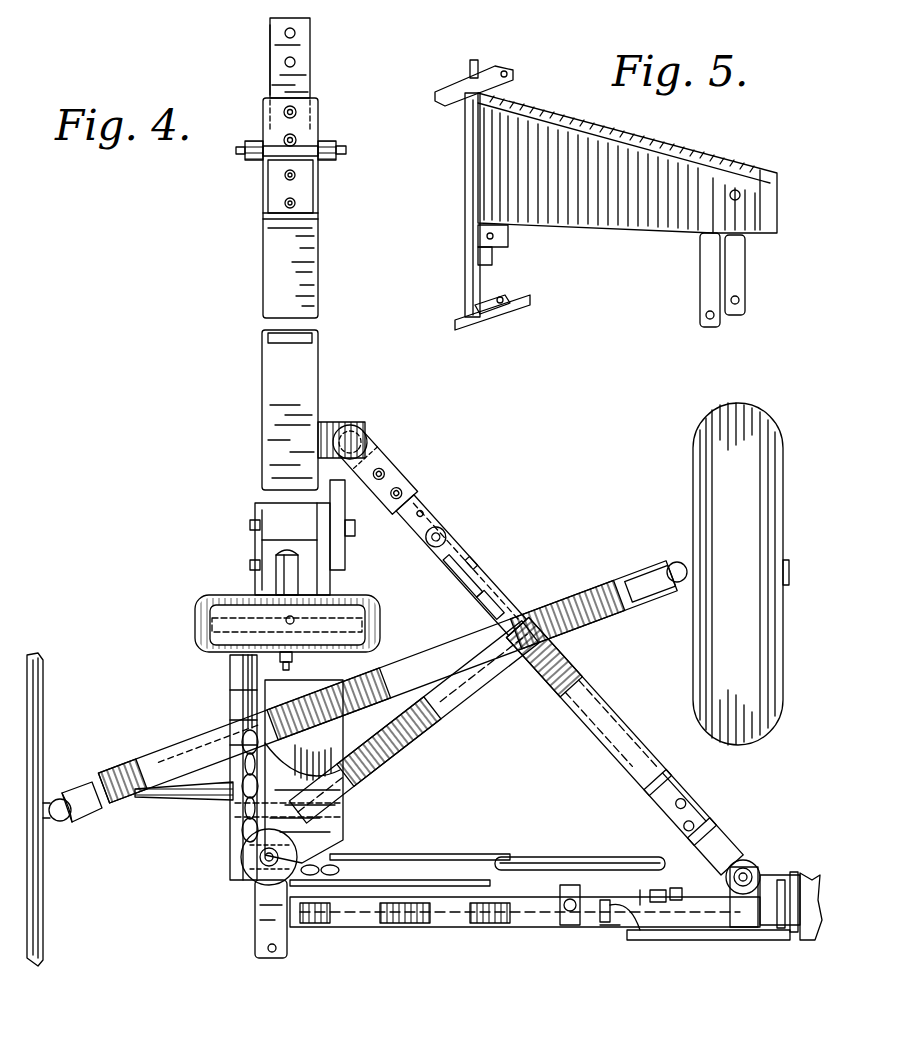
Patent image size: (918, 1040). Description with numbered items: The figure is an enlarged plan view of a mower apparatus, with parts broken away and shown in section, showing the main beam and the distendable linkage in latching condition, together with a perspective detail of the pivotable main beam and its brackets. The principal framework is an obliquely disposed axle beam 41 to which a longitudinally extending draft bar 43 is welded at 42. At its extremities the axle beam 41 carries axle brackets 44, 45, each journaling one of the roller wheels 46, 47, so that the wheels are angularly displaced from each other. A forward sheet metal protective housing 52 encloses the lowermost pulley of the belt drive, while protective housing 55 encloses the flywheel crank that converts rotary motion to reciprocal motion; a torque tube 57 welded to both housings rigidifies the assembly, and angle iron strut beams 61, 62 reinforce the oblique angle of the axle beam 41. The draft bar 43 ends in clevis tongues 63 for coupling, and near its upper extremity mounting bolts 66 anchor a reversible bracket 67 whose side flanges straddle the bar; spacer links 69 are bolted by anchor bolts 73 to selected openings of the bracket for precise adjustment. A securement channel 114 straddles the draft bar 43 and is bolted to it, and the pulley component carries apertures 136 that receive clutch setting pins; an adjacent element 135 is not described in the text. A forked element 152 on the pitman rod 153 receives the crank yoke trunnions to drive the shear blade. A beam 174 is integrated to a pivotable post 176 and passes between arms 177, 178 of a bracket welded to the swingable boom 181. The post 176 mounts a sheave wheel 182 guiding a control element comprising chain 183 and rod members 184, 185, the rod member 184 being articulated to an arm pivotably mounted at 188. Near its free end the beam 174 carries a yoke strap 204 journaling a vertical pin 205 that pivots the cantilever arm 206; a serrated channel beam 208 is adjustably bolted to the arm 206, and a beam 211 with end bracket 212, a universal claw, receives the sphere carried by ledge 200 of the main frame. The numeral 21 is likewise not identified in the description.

In FIG. 4, the centerline / device axis 21 is at (291, 391).
In FIG. 4, the axle beam 41 is at (150, 762).
In FIG. 4, the weld 42 is at (240, 705).
In FIG. 4, the draft bar 43 is at (272, 70).
In FIG. 4, the axle bracket 44 is at (60, 822).
In FIG. 4, the axle bracket 45 is at (675, 565).
In FIG. 4, the roller wheel 46 is at (45, 942).
In FIG. 4, the roller wheel 47 is at (765, 712).
In FIG. 4, the forward sheet metal protective housing 52 is at (380, 630).
In FIG. 4, the protective housing 55 is at (355, 823).
In FIG. 4, the torque tube 57 is at (395, 768).
In FIG. 4, the angle iron strut beam 61 is at (430, 720).
In FIG. 4, the angle iron strut beam 62 is at (180, 803).
In FIG. 4, the clevis tongues 63 is at (312, 68).
In FIG. 4, the mounting bolts 66 is at (284, 205).
In FIG. 4, the reversible bracket 67 is at (320, 202).
In FIG. 4, the spacer links 69 is at (325, 147).
In FIG. 4, the anchor bolts 73 is at (346, 150).
In FIG. 4, the securement channel 114 is at (282, 536).
In FIG. 4, the wheel bolt 135 is at (268, 664).
In FIG. 4, the apertures 136 is at (262, 640).
In FIG. 4, the forked element 152 is at (330, 862).
In FIG. 4, the pitman rod 153 is at (500, 857).
In FIG. 4, the beam 174 is at (672, 915).
In FIG. 5, the pivotable post 176 is at (470, 258).
In FIG. 5, the arm of support bracket 177 is at (705, 296).
In FIG. 5, the arm of support bracket 178 is at (738, 278).
In FIG. 5, the swingable boom 181 is at (640, 175).
In FIG. 4, the sheave wheel 182 is at (250, 870).
In FIG. 4, the chain 183 is at (256, 812).
In FIG. 4, the rod member 184 is at (245, 681).
In FIG. 4, the rod member 185 is at (422, 888).
In FIG. 4, the pivot mounting 188 is at (355, 528).
In FIG. 4, the ledge 200 is at (325, 420).
In FIG. 4, the yoke strap 204 is at (728, 890).
In FIG. 4, the vertical pin 205 is at (748, 870).
In FIG. 4, the cantilever arm 206 is at (748, 852).
In FIG. 4, the channel beam 208 is at (605, 705).
In FIG. 4, the beam 211 is at (432, 506).
In FIG. 4, the end bracket 212 is at (372, 452).